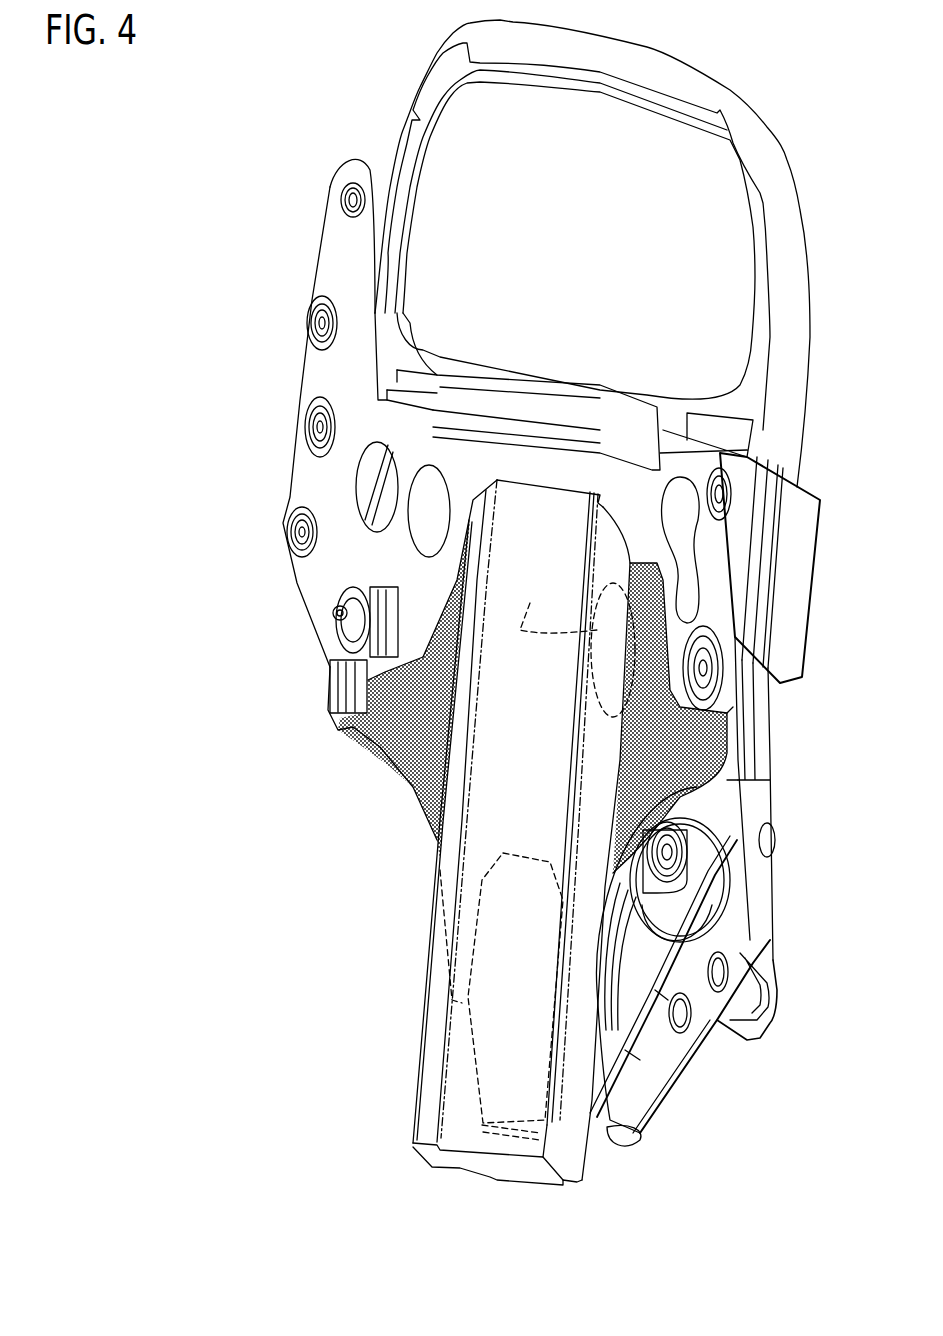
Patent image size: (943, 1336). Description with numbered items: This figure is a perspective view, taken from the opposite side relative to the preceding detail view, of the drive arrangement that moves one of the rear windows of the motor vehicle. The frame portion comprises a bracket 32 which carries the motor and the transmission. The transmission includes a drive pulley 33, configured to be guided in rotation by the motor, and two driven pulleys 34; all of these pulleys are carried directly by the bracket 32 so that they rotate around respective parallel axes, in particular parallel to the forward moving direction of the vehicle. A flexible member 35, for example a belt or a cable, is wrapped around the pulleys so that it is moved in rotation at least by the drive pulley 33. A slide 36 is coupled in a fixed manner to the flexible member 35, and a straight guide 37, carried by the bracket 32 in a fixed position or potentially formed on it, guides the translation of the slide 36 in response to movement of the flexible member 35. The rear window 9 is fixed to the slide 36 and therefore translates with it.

The rear window 9 is at (410, 720).
The bracket 32 is at (650, 1040).
The drive pulley 33 is at (697, 877).
The driven pulleys 34 is at (653, 1187).
The flexible member 35 is at (720, 747).
The slide 36 is at (487, 1093).
The straight guide 37 is at (438, 938).